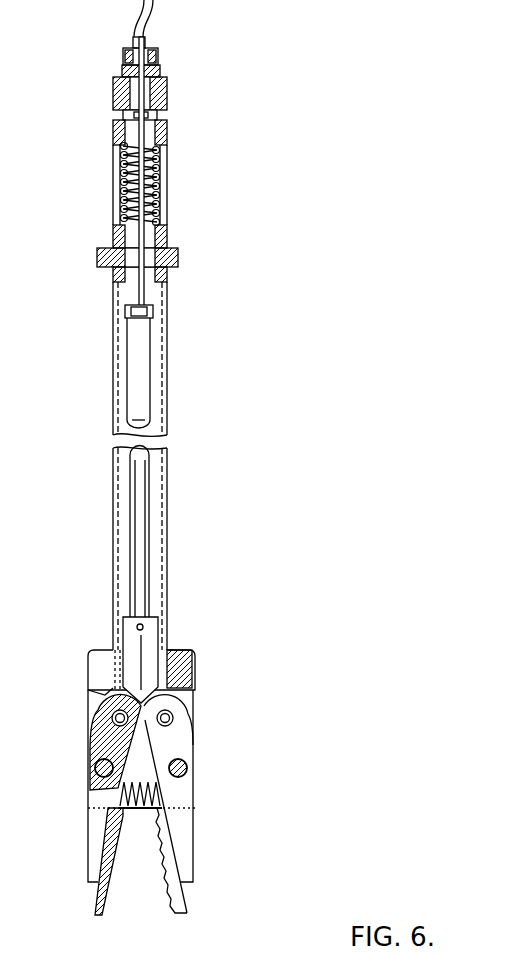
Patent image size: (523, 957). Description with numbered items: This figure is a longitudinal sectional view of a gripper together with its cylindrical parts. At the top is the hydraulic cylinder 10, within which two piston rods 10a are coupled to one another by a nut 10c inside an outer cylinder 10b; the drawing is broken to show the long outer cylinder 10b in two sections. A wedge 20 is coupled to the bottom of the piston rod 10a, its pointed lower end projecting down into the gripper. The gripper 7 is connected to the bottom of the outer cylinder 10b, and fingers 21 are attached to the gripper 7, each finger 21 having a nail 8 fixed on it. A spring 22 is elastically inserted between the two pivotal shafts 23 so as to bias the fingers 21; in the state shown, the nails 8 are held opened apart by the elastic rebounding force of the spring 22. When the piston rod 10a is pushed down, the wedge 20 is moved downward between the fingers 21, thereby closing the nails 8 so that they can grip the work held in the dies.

The hydraulic cylinder 10 is at (168, 173).
The piston rod 10a is at (168, 203).
The outer cylinder 10b is at (166, 378).
The nut 10c is at (154, 311).
The gripper 7 is at (193, 672).
The wedge 20 is at (122, 643).
The finger 21 is at (92, 822).
The spring 22 is at (146, 812).
The pivotal shaft 23 is at (95, 768).
The nail 8 is at (96, 912).